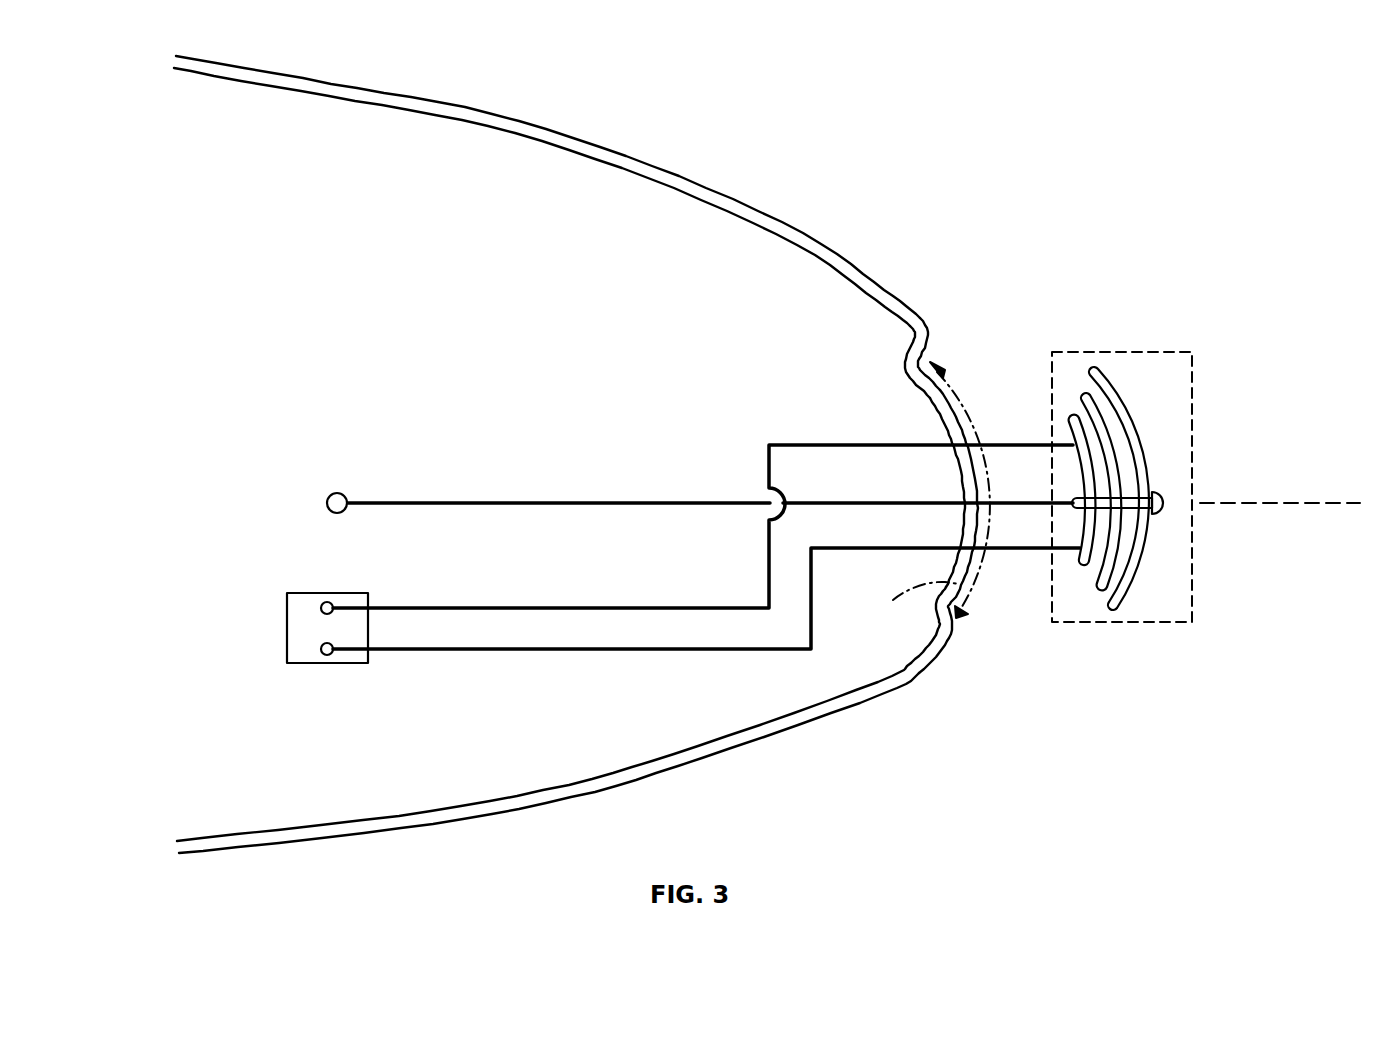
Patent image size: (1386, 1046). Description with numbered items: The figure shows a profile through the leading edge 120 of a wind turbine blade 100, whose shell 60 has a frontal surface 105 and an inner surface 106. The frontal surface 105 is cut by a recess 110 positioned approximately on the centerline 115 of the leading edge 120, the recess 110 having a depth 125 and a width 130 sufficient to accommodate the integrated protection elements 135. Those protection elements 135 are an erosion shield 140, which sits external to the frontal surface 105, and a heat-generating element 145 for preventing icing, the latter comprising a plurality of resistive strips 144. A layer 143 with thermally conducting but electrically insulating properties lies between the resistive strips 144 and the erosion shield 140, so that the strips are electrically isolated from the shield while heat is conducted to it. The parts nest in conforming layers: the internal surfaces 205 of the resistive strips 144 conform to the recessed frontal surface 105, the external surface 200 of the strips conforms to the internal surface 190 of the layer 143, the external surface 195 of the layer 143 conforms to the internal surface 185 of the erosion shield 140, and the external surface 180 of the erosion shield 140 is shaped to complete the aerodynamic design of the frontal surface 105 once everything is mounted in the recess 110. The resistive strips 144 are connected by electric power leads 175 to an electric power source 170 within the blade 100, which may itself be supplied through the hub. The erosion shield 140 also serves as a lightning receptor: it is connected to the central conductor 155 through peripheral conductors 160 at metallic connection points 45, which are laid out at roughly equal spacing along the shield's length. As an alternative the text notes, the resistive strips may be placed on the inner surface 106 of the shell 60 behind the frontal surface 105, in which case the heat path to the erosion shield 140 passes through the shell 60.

The wind turbine blade 100 is at (752, 78).
The shell 60 is at (850, 264).
The frontal surface 105 is at (943, 378).
The depth 125 is at (958, 621).
The recess 110 is at (965, 388).
The width 130 is at (902, 606).
The inner surface 106 is at (945, 421).
The leading edge 120 is at (1000, 272).
The peripheral conductors 160 is at (622, 497).
The central conductor 155 is at (336, 493).
The electric power leads 175 is at (638, 650).
The heat-generating element 145 is at (1086, 567).
The electric power source 170 is at (300, 664).
The integrated protection elements 135 is at (1192, 410).
The centerline 115 is at (1293, 499).
The external surface of thermally conductive/electrically insulating layer 195 is at (1147, 525).
The internal surface of erosion shield 185 is at (1143, 551).
The erosion shield 140 is at (1105, 604).
The thermally conductive/electrically insulating layer 143 is at (1060, 521).
The external surface of resistive strips 200 is at (1100, 592).
The internal surface of thermally conductive/electrically insulating layer 190 is at (1038, 503).
The internal surfaces of resistive strips 205 is at (1078, 556).
The metallic connection points 45 is at (1160, 500).
The external surface of erosion shield 180 is at (1163, 508).
The resistive strips 144 is at (989, 691).